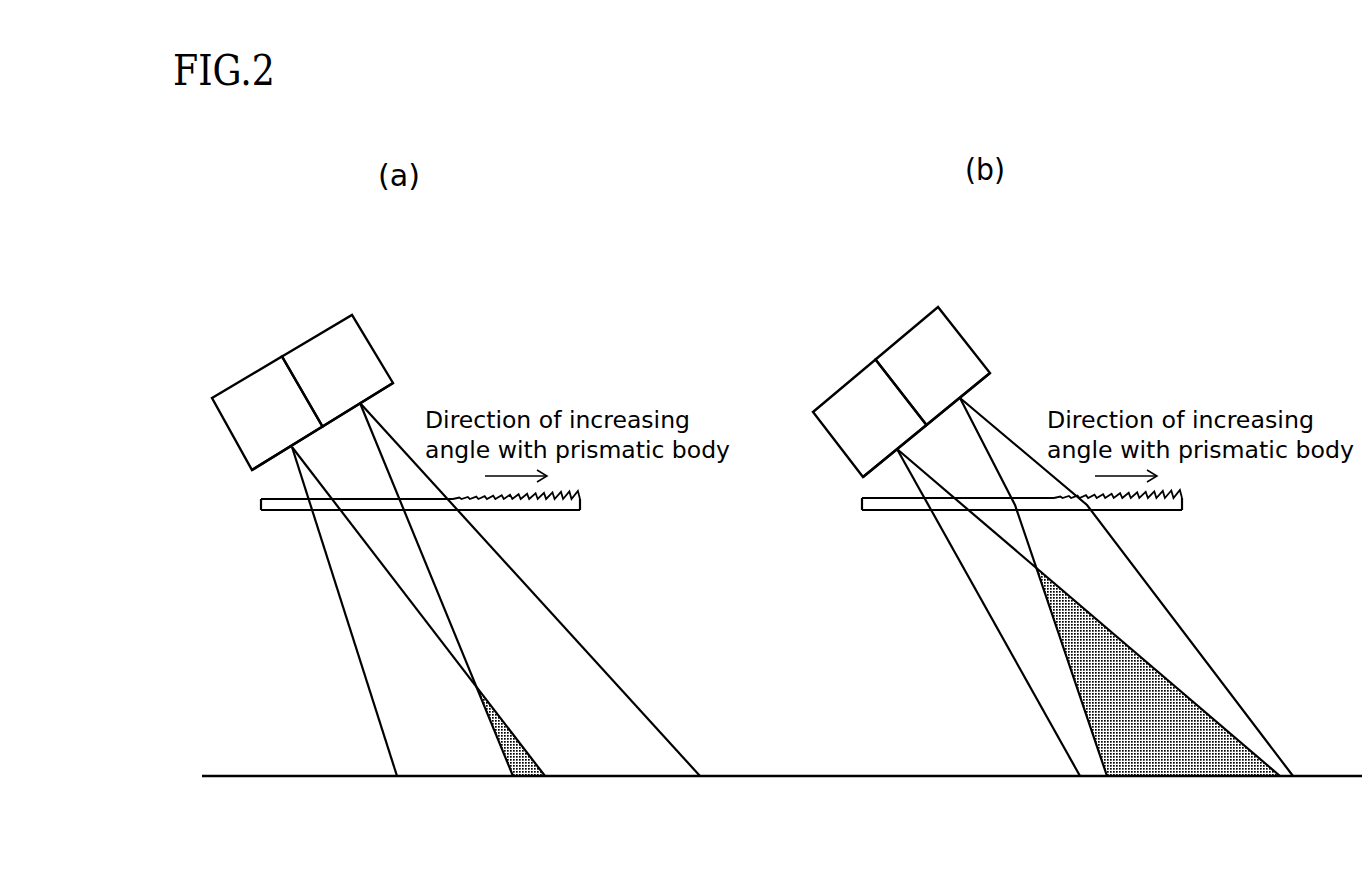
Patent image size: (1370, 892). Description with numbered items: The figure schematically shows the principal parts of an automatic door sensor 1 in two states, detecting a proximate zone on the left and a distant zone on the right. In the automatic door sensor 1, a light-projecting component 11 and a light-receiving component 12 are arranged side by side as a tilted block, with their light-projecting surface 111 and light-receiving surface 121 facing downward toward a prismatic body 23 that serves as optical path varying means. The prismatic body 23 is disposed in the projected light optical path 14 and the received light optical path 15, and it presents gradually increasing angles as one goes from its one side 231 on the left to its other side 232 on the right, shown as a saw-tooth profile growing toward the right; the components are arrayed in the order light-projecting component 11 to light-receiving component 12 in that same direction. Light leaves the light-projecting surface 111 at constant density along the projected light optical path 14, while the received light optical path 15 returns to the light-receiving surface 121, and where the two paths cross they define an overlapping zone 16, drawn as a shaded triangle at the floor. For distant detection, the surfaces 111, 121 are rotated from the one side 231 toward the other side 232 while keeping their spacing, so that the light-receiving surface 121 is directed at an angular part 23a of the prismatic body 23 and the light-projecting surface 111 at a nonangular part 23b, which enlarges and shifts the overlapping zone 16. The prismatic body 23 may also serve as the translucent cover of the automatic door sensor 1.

The automatic door sensor 1 is at (644, 386).
The light-projecting component 11 is at (248, 390).
The light-receiving component 12 is at (322, 345).
The light-projecting surface 111 is at (268, 465).
The light-receiving surface 121 is at (378, 400).
The prismatic body 23 is at (771, 510).
The one side of prismatic body 231 is at (287, 515).
The other side of prismatic body 232 is at (582, 503).
The angular part of prismatic body 23a is at (1021, 512).
The nonangular part of prismatic body 23b is at (948, 512).
The projected light optical path 14 is at (388, 742).
The received light optical path 15 is at (605, 690).
The overlapping zone 16 is at (507, 742).